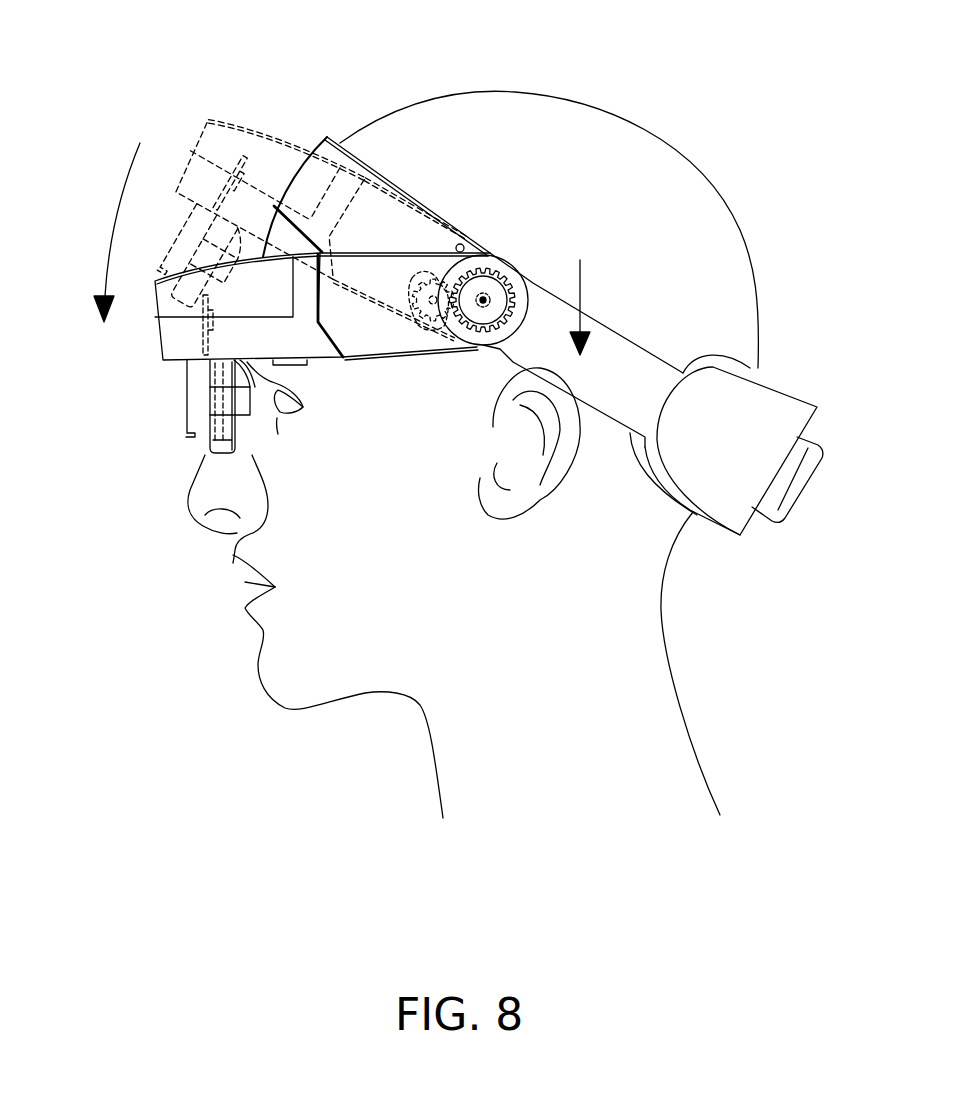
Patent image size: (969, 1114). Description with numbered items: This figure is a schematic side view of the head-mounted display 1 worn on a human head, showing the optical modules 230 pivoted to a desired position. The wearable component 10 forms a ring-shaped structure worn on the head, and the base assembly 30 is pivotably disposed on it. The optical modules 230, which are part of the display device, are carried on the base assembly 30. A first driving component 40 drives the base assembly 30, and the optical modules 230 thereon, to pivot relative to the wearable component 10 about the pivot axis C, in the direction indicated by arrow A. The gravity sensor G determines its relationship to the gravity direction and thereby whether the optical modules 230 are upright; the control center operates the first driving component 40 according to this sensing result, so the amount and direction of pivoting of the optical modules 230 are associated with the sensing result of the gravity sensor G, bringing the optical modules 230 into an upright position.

The head-mounted display 1 is at (446, 273).
The wearable component 10 is at (630, 315).
The base assembly 30 is at (322, 374).
The first driving component 40 is at (493, 240).
The optical module 230 is at (205, 426).
The gravity sensor G is at (207, 320).
The pivot axis C is at (483, 304).
The arrow A is at (116, 220).